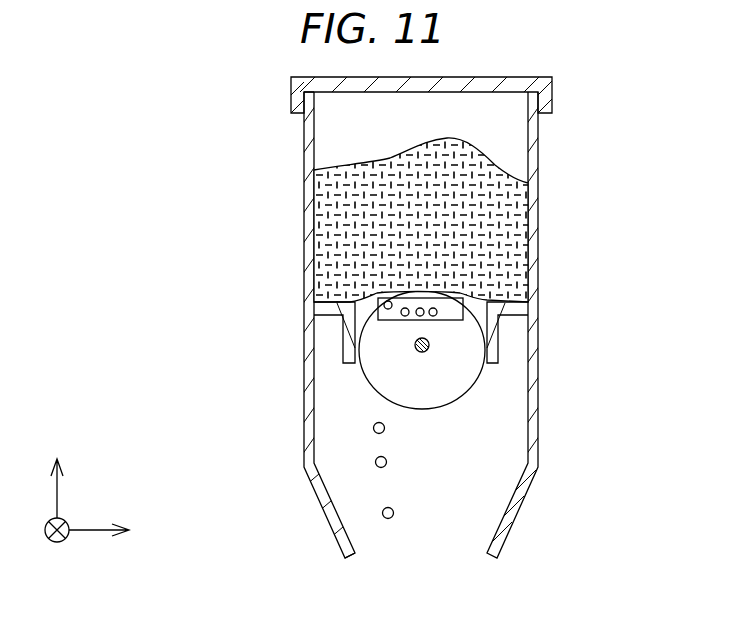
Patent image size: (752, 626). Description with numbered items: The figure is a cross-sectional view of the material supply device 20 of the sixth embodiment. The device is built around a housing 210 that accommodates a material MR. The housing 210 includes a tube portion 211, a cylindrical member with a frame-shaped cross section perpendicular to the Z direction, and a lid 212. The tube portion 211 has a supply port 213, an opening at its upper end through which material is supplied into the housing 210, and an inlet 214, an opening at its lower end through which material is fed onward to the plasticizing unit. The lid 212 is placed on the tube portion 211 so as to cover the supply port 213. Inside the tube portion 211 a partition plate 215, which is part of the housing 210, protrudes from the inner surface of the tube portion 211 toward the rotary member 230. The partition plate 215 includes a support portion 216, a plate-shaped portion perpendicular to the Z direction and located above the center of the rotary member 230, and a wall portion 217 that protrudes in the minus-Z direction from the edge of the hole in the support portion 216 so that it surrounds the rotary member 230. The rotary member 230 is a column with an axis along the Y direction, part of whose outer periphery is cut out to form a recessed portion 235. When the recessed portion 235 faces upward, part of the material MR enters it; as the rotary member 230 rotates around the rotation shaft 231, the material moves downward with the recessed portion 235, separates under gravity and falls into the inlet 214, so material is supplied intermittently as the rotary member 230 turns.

The material supply device 20 is at (108, 102).
The housing 210 is at (641, 93).
The tube portion 211 is at (540, 140).
The lid 212 is at (552, 105).
The supply port 213 is at (318, 104).
The inlet 214 is at (357, 553).
The partition plate 215 is at (611, 310).
The support portion 216 is at (512, 310).
The wall portion 217 is at (490, 330).
The rotary member 230 is at (455, 378).
The rotation shaft 231 is at (422, 352).
The recessed portion 235 is at (450, 318).
The material MR is at (323, 213).